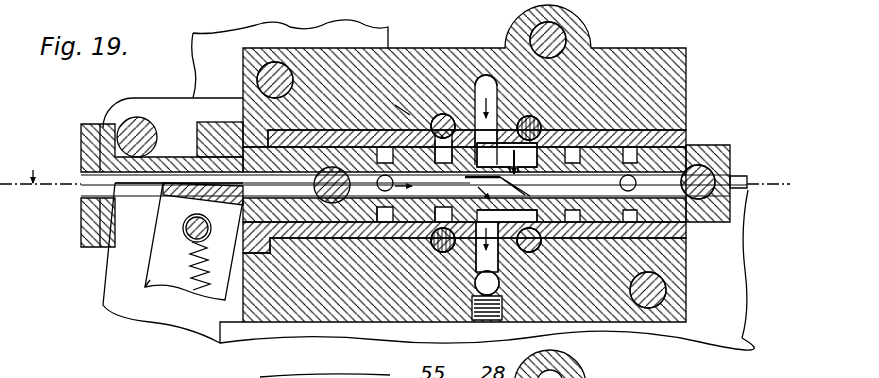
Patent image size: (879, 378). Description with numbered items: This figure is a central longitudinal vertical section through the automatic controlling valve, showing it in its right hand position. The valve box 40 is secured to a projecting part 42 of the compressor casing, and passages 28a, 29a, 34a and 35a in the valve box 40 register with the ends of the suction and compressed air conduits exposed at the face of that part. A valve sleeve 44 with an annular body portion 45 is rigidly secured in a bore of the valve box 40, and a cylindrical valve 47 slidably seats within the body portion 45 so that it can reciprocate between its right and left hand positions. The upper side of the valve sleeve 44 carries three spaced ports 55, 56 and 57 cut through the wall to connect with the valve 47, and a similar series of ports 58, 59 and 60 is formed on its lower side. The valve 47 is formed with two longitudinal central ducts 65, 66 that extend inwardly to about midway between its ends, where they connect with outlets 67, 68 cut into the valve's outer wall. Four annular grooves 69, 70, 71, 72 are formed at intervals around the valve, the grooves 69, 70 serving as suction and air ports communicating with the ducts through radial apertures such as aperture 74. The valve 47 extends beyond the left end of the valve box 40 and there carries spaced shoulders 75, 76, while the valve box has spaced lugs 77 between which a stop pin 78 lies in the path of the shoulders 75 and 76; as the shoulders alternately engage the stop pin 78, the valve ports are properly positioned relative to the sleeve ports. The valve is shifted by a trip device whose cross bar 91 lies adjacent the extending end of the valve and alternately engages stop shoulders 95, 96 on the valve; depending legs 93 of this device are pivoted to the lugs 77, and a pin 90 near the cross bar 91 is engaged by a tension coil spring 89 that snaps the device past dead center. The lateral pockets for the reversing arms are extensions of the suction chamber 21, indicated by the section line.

The suction chamber 21 is at (395, 193).
The passage 28a is at (486, 74).
The passage 29a is at (486, 284).
The passage 34a is at (441, 114).
The passage 35a is at (527, 240).
The valve box 40 is at (641, 48).
The projecting part 42 is at (245, 74).
The valve sleeve 44 is at (665, 130).
The body portion 45 is at (680, 147).
The cylindrical valve 47 is at (83, 140).
The port 55 is at (403, 110).
The port 56 is at (518, 118).
The port 57 is at (560, 130).
The port 58 is at (420, 228).
The port 59 is at (487, 275).
The port 60 is at (557, 233).
The longitudinal central duct 65 is at (316, 188).
The longitudinal central duct 66 is at (689, 183).
The outlet 67 is at (509, 230).
The outlet 68 is at (507, 158).
The annular groove 69 is at (372, 225).
The annular groove 70 is at (632, 217).
The annular groove 71 is at (438, 240).
The annular groove 72 is at (613, 240).
The radial aperture 74 is at (620, 184).
The shoulder 75 is at (104, 124).
The shoulder 76 is at (204, 131).
The lug 77 is at (428, 266).
The stop pin 78 is at (138, 118).
The tension coil spring 89 is at (190, 284).
The pin 90 is at (187, 237).
The cross bar 91 is at (178, 197).
The leg portion 93 is at (155, 280).
The stop shoulder 95 is at (100, 220).
The stop shoulder 96 is at (209, 228).